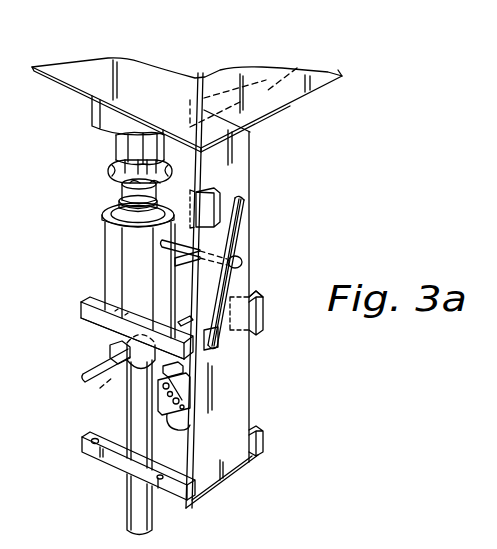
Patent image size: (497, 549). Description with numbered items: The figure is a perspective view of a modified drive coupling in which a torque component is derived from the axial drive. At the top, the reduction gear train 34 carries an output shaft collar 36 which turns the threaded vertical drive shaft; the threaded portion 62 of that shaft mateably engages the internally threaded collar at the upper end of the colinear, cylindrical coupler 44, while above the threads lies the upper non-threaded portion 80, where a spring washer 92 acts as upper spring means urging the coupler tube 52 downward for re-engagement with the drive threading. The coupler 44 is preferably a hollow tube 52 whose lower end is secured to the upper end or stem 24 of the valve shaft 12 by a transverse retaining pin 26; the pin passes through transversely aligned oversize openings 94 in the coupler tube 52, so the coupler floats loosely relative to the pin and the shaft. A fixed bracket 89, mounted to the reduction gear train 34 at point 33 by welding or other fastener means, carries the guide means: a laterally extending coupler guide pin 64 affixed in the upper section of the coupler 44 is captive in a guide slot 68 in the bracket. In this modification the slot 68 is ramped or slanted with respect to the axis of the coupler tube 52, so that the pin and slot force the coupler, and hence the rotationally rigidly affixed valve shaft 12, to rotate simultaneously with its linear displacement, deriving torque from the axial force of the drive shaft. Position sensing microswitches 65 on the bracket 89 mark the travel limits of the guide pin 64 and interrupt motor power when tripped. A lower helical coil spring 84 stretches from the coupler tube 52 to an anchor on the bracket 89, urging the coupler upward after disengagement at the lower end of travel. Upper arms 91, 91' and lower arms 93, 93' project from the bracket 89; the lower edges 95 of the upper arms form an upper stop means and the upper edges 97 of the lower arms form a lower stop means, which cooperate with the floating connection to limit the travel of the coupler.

The valve shaft 12 is at (130, 505).
The stem 24 is at (90, 395).
The transverse retaining pin 26 is at (80, 378).
The mounting point 33 is at (297, 68).
The reduction gear train 34 is at (95, 70).
The output shaft collar 36 is at (115, 140).
The coupler 44 is at (98, 247).
The coupler tube 52 is at (110, 270).
The threaded portion 62 is at (117, 206).
The coupler guide pin 64 is at (242, 258).
The position sensing microswitch 65 is at (213, 187).
The guide slot 68 is at (244, 225).
The upper non-threaded portion 80 is at (121, 190).
The helical coil spring 84 is at (188, 390).
The bracket 89 is at (240, 378).
The upper arm 91 is at (102, 321).
The upper arm 91' is at (286, 280).
The spring washer 92 is at (110, 166).
The lower arm 93 is at (110, 466).
The lower arm 93' is at (206, 437).
The oversize openings 94 is at (107, 350).
The lower edges 95 is at (81, 327).
The upper edges 97 is at (115, 445).